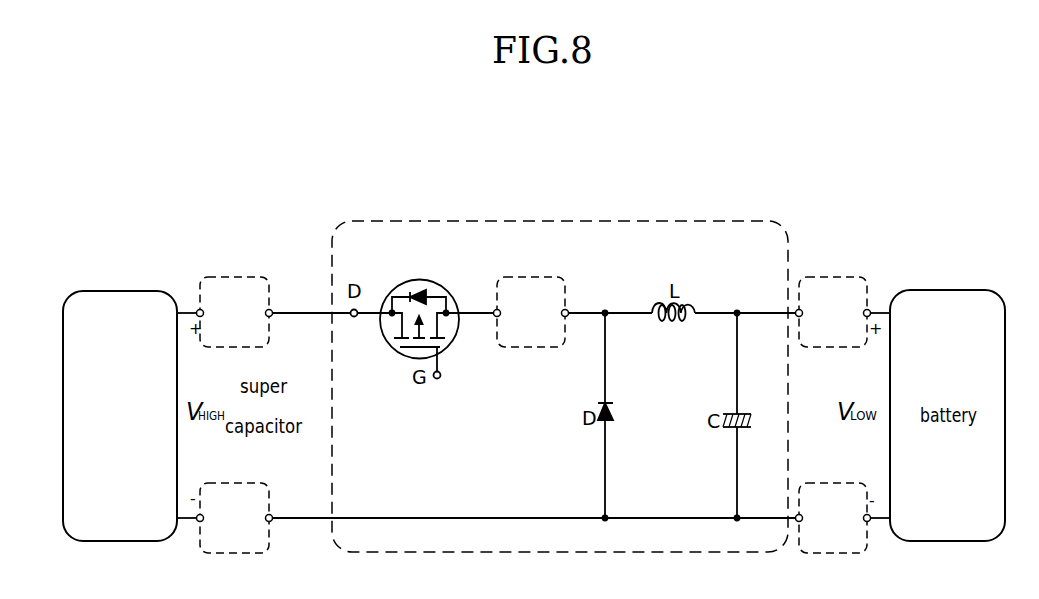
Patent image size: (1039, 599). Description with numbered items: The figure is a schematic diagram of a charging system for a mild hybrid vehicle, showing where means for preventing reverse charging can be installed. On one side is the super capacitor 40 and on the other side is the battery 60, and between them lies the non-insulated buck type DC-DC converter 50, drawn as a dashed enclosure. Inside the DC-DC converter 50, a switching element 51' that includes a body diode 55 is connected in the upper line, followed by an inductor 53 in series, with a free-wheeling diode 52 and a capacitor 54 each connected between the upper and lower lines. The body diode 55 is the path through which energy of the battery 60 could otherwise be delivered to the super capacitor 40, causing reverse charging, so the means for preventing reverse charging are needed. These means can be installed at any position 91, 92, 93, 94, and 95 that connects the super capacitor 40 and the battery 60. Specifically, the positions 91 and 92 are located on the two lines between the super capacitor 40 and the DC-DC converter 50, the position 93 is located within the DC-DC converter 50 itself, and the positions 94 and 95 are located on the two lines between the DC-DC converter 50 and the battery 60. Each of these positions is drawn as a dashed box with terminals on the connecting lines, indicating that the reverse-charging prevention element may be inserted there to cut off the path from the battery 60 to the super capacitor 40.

The super capacitor 40 is at (121, 291).
The DC-DC converter 50 is at (628, 221).
The switching element 51' is at (419, 309).
The free-wheeling diode 52 is at (608, 402).
The inductor 53 is at (697, 300).
The capacitor 54 is at (739, 413).
The body diode 55 is at (432, 291).
The battery 60 is at (947, 290).
The position 91 is at (240, 277).
The position 92 is at (240, 483).
The position 93 is at (530, 277).
The position 94 is at (833, 277).
The position 95 is at (833, 483).